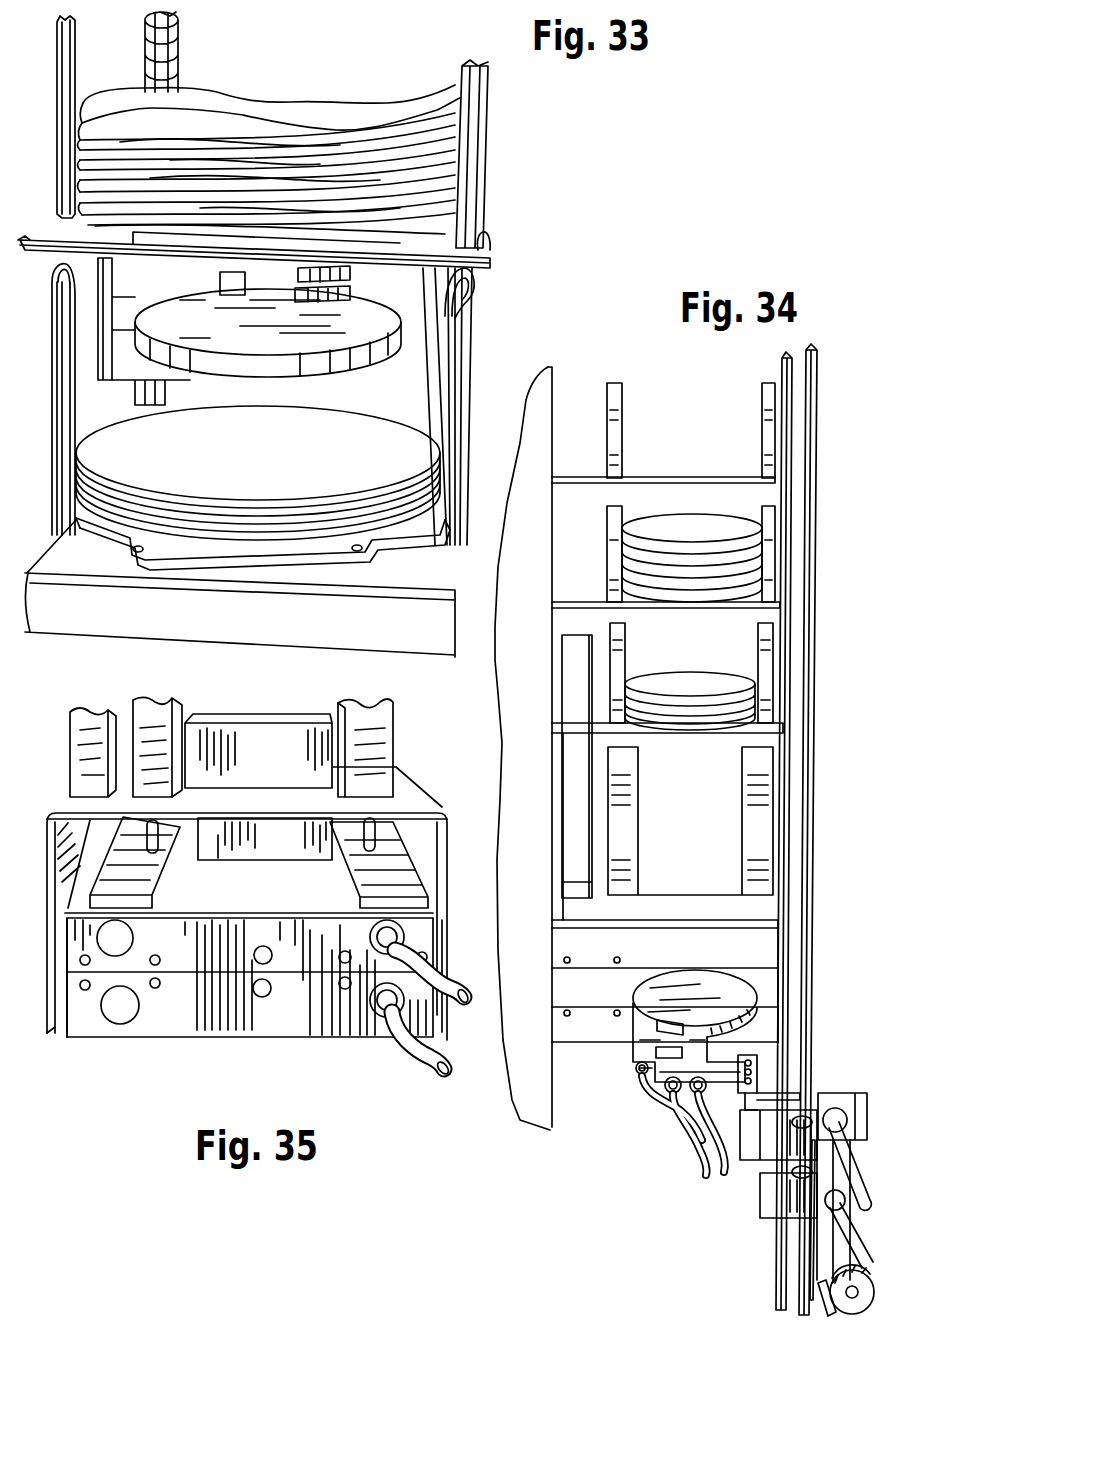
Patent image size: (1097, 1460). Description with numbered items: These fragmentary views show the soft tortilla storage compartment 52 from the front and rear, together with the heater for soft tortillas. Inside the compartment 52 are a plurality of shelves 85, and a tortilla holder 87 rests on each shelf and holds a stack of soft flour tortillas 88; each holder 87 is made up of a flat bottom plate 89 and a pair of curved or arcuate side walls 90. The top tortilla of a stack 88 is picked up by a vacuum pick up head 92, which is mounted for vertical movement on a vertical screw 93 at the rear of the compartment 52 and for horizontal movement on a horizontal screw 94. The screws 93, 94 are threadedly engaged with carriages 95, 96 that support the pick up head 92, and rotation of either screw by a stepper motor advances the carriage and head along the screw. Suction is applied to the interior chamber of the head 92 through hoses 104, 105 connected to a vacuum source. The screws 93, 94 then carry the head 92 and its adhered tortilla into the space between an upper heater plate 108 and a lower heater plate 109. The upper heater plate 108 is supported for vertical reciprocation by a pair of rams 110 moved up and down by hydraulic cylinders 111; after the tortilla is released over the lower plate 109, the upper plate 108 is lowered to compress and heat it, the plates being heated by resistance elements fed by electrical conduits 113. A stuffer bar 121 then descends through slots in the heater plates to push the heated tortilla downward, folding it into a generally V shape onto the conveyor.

In FIG. 34, the soft tortilla compartment 52 is at (745, 535).
In FIG. 33, the shelves 85 is at (480, 250).
In FIG. 34, the shelves 85 is at (585, 480).
In FIG. 33, the tortilla holder 87 is at (484, 98).
In FIG. 34, the tortilla holder 87 is at (618, 420).
In FIG. 33, the stack of soft flour tortillas 88 is at (312, 112).
In FIG. 34, the stack of soft flour tortillas 88 is at (718, 547).
In FIG. 33, the flat bottom plate 89 is at (120, 522).
In FIG. 33, the arcuate side walls 90 is at (57, 312).
In FIG. 33, the vacuum pick up head 92 is at (462, 348).
In FIG. 34, the vacuum pick up head 92 is at (672, 1005).
In FIG. 33, the vertical screw 93 is at (160, 40).
In FIG. 34, the vertical screw 93 is at (790, 725).
In FIG. 34, the horizontal screw 94 is at (846, 1256).
In FIG. 34, the carriage 95 is at (763, 1148).
In FIG. 34, the carriage 96 is at (838, 1178).
In FIG. 34, the hose 104 is at (644, 1080).
In FIG. 34, the hose 105 is at (690, 1112).
In FIG. 34, the upper heater plate 108 is at (763, 943).
In FIG. 35, the upper heater plate 108 is at (237, 938).
In FIG. 34, the lower heater plate 109 is at (762, 1032).
In FIG. 35, the lower heater plate 109 is at (178, 1022).
In FIG. 35, the rams 110 is at (150, 826).
In FIG. 34, the hydraulic cylinders 111 is at (757, 810).
In FIG. 35, the hydraulic cylinders 111 is at (157, 733).
In FIG. 35, the electrical conduits 113 is at (462, 1005).
In FIG. 35, the stuffer bar 121 is at (255, 730).